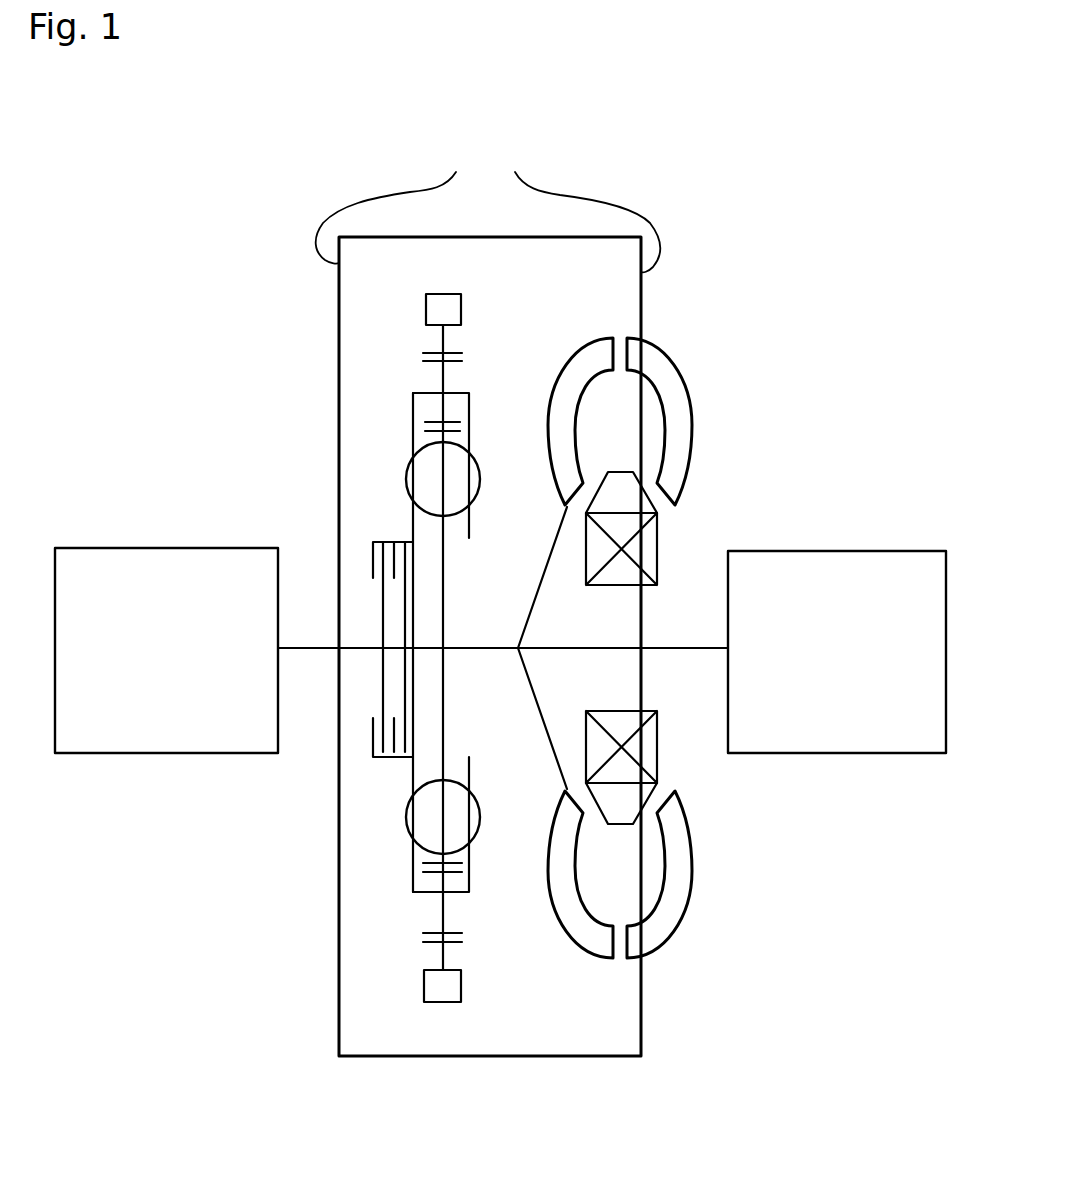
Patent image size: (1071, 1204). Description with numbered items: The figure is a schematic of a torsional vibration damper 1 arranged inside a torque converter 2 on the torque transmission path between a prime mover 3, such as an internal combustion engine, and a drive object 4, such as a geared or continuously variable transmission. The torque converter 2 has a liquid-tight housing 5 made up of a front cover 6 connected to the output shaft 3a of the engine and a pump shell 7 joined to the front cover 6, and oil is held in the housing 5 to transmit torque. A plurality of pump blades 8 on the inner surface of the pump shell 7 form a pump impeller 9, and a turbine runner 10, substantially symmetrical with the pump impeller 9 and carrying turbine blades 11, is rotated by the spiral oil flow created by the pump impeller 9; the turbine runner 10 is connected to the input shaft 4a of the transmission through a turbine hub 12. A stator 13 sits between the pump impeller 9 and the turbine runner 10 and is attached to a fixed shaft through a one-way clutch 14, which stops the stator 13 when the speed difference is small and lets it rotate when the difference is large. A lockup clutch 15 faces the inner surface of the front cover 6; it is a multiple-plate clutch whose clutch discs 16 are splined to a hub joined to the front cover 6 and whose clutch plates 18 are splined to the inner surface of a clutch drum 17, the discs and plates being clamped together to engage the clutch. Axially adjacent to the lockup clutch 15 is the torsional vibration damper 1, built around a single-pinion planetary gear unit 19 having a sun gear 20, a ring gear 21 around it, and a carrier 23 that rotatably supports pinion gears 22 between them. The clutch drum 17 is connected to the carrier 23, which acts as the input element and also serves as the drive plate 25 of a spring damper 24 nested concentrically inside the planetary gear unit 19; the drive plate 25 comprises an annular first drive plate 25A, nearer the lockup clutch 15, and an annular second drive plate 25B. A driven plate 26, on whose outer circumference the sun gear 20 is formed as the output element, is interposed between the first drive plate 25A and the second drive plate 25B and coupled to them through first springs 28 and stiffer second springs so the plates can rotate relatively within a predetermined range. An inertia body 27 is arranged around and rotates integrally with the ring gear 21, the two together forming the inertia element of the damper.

The torsional vibration damper 1 is at (431, 385).
The torque converter 2 is at (500, 579).
The prime mover 3 is at (100, 548).
The output shaft 3a is at (296, 647).
The drive object 4 is at (843, 551).
The input shaft 4a is at (671, 647).
The housing 5 is at (488, 580).
The front cover 6 is at (478, 600).
The pump shell 7 is at (585, 208).
The pump blades 8 is at (656, 368).
The pump impeller 9 is at (655, 635).
The turbine runner 10 is at (580, 442).
The turbine blades 11 is at (578, 432).
The turbine hub 12 is at (534, 612).
The stator 13 is at (634, 497).
The one-way clutch 14 is at (652, 537).
The lockup clutch 15 is at (341, 658).
The clutch discs 16 is at (406, 672).
The clutch drum 17 is at (400, 758).
The clutch plates 18 is at (412, 732).
The single-pinion planetary gear unit 19 is at (401, 344).
The sun gear 20 is at (425, 433).
The ring gear 21 is at (425, 351).
The pinion gears 22 is at (425, 365).
The carrier 23 is at (326, 697).
The spring damper 24 is at (396, 826).
The drive plate 25 is at (326, 697).
The first drive plate 25A is at (321, 642).
The second drive plate 25B is at (327, 742).
The driven plate 26 is at (447, 569).
The inertia body 27 is at (441, 293).
The first springs 28 is at (481, 477).